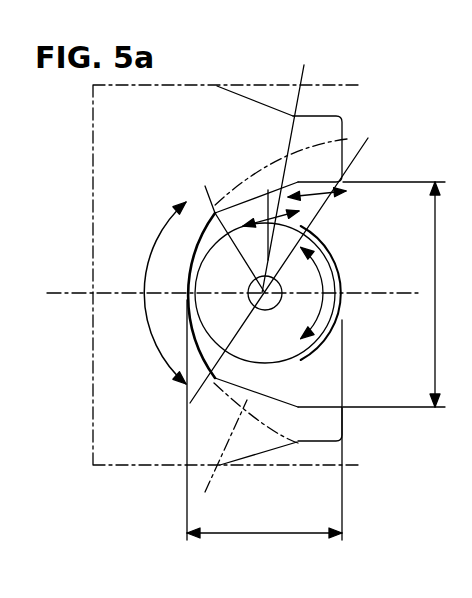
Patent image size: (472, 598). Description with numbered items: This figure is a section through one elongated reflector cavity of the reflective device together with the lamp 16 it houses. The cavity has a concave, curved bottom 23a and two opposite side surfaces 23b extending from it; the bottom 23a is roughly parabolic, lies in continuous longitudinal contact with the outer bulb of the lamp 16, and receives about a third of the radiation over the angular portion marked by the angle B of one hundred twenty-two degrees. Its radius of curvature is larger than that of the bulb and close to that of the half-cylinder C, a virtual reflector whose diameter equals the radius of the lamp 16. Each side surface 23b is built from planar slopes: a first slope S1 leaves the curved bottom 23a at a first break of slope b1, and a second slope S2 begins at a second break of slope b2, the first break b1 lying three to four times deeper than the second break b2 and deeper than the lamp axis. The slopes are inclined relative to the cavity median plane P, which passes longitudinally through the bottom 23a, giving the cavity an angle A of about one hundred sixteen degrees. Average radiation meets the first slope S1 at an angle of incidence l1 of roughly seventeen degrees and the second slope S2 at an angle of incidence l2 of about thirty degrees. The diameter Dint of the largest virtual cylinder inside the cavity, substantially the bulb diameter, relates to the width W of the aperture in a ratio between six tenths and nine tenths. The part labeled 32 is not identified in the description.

The lamp 16 is at (331, 313).
The bottom 23a is at (200, 352).
The side surfaces 23b is at (237, 207).
The cage bar 32 is at (368, 237).
The angle A is at (325, 284).
The angle B is at (152, 293).
The half-cylinder C is at (219, 458).
The cavity median plane P is at (230, 273).
The first slope S1 is at (292, 167).
The second slope S2 is at (292, 260).
The first break of slope b1 is at (215, 213).
The second break of slope b2 is at (301, 183).
The angle of incidence l1 is at (271, 213).
The angle of incidence l2 is at (329, 193).
The width of the cavity aperture W is at (403, 294).
The diameter of the bigger virtual cylinder Dint is at (264, 434).